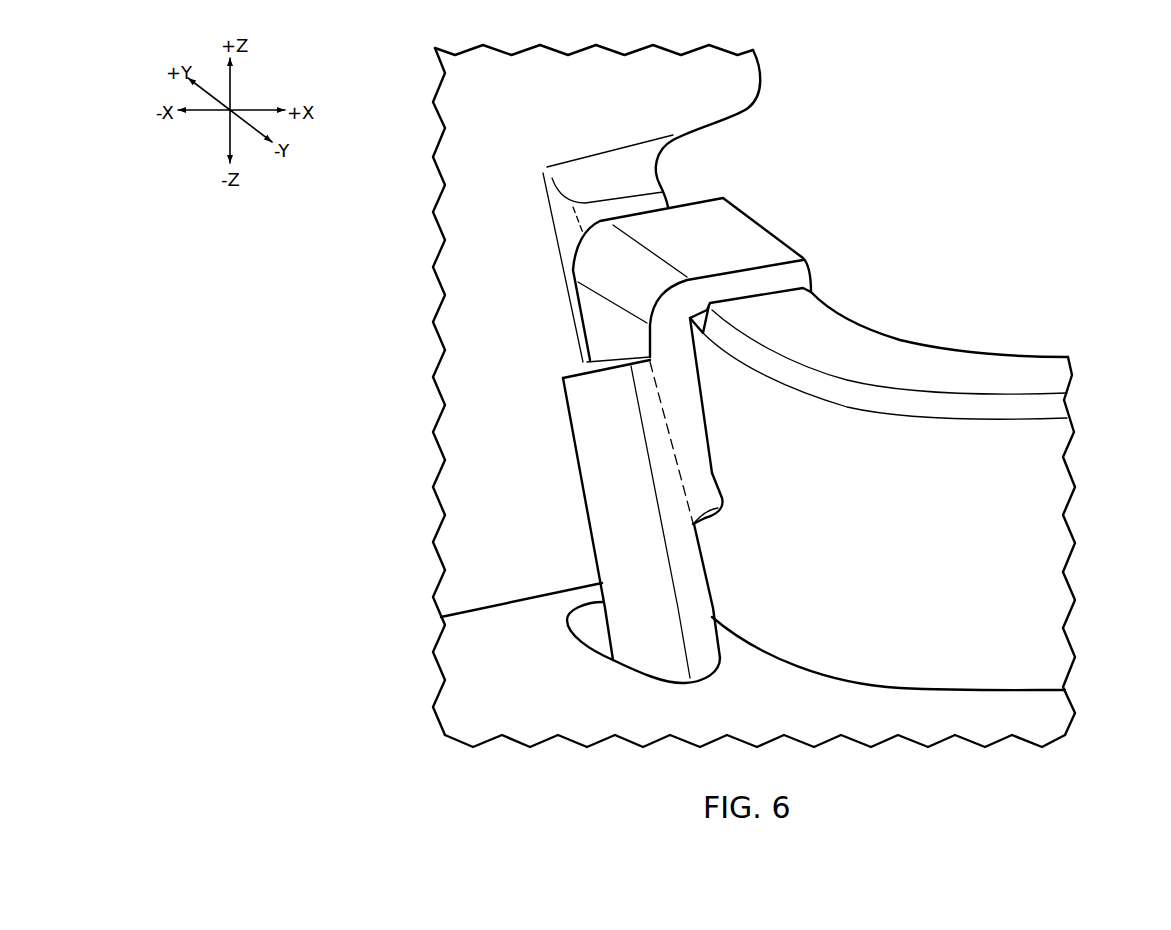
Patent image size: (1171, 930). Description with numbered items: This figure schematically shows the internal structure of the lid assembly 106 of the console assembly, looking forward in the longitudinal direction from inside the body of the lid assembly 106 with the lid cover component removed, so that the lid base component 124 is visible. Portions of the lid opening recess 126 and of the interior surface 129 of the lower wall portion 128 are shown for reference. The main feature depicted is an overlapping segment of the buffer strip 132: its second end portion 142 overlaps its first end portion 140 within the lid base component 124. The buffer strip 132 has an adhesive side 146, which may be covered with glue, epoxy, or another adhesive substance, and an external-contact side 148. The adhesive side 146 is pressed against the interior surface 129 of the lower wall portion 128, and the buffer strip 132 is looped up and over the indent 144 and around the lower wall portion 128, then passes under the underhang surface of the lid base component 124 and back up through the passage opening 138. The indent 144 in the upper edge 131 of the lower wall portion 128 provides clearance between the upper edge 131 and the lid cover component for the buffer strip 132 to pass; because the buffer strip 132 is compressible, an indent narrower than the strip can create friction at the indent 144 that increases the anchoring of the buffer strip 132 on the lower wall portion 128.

The lid assembly 106 is at (1000, 120).
The lid base component 124 is at (750, 78).
The lid opening recess 126 is at (837, 230).
The lower wall portion 128 is at (872, 325).
The interior surface 129 is at (1050, 473).
The upper edge 131 is at (1037, 363).
The buffer strip 132 is at (558, 490).
The passage opening 138 is at (583, 616).
The first end portion 140 is at (711, 473).
The second end portion 142 is at (563, 383).
The indent 144 is at (588, 219).
The adhesive side 146 is at (719, 452).
The external-contact side 148 is at (593, 449).